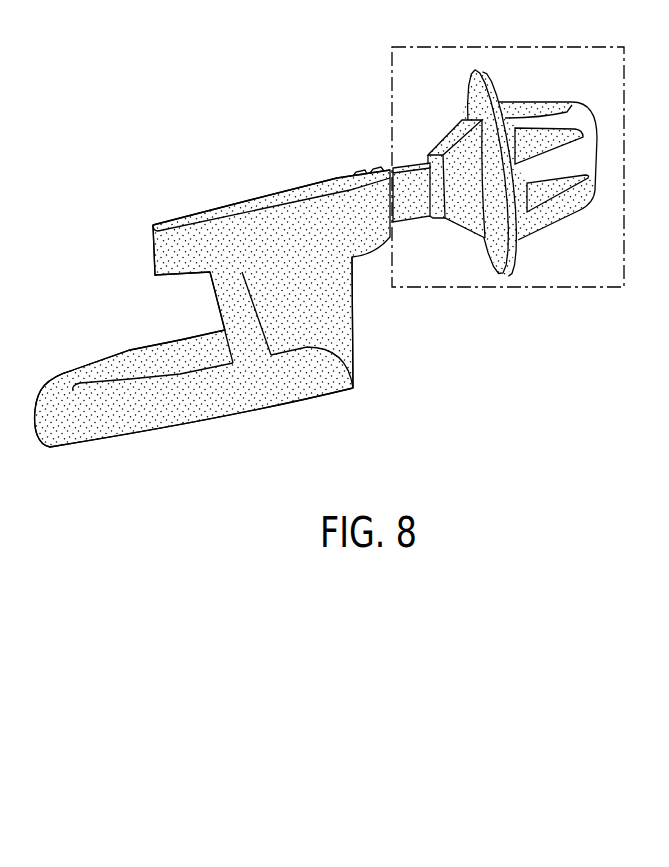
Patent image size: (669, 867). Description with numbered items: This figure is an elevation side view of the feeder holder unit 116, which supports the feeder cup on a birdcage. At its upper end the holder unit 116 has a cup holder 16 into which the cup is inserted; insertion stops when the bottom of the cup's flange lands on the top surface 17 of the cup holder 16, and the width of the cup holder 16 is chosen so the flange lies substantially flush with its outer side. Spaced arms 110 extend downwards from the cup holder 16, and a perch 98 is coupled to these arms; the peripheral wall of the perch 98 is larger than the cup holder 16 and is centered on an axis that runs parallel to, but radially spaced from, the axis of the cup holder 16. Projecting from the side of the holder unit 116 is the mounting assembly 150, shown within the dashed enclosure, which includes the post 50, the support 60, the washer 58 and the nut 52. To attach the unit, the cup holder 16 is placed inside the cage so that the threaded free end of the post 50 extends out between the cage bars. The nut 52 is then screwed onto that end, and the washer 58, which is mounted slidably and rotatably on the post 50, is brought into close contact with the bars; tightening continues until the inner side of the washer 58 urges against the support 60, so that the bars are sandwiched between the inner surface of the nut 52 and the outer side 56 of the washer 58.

The holder unit 116 is at (101, 247).
The cup holder 16 is at (236, 237).
The top surface 17 is at (228, 218).
The spaced arms 110 is at (312, 312).
The perch 98 is at (156, 412).
The post 50 is at (424, 217).
The support 60 is at (471, 149).
The outer side of washer 56 is at (520, 251).
The washer 58 is at (506, 138).
The nut 52 is at (563, 190).
The mounting assembly 150 is at (613, 289).